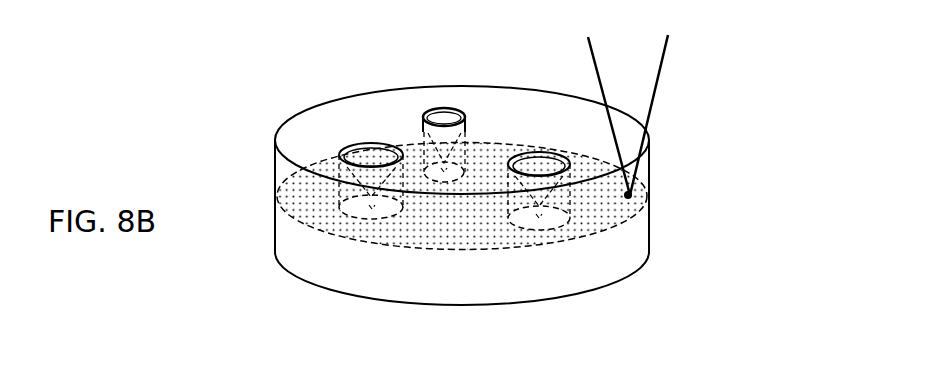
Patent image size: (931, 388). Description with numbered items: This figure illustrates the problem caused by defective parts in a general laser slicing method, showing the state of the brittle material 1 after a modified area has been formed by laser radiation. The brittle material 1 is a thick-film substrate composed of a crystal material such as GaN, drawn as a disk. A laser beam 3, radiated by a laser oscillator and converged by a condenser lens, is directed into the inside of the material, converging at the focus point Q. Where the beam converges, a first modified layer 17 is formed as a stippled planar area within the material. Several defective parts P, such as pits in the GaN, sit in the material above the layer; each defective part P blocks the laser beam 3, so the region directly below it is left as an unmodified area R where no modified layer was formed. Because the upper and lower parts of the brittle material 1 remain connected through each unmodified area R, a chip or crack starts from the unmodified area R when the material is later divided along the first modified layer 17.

The brittle material 1 is at (303, 143).
The laser beam 3 is at (596, 52).
The first modified layer 17 is at (363, 223).
The defective part P is at (373, 142).
The focus point Q is at (628, 199).
The unmodified area R is at (522, 232).